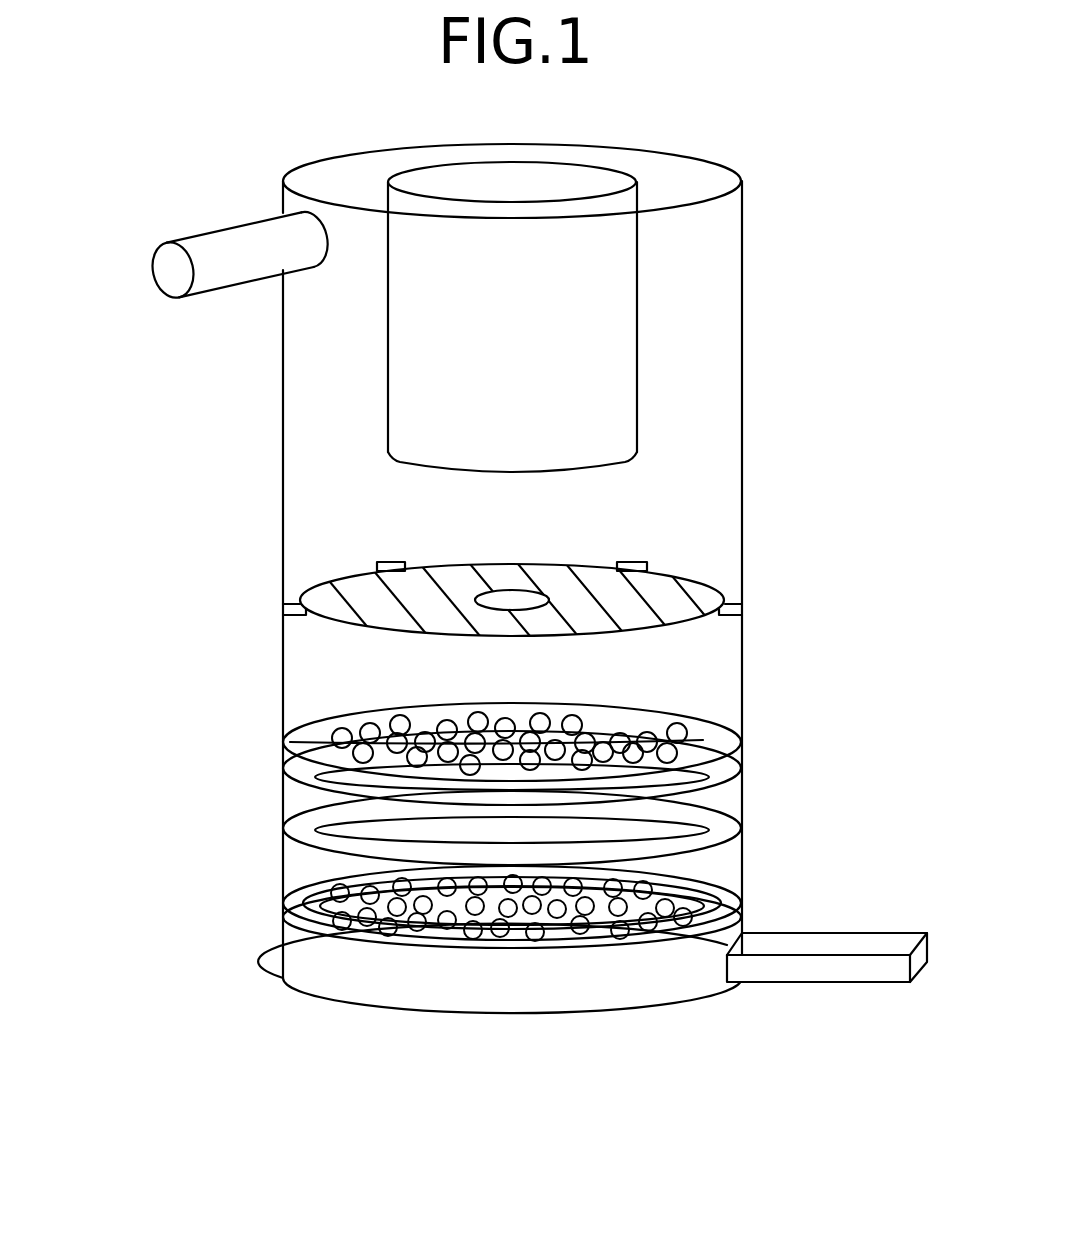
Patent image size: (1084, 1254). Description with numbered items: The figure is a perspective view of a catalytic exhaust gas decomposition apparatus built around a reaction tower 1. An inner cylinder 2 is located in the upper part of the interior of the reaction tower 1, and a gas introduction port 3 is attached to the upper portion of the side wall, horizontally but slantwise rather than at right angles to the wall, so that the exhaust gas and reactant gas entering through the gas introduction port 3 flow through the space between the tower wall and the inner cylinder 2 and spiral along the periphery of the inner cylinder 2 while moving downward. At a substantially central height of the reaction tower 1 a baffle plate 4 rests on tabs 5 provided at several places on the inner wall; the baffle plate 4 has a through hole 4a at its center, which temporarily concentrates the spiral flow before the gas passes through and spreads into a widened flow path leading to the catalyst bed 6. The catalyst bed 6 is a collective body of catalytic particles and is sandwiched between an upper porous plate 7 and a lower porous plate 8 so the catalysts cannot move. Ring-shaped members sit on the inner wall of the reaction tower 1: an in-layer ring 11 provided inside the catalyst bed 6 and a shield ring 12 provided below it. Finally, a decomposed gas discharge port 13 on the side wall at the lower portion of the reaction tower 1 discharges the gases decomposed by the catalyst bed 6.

The reaction tower 1 is at (742, 345).
The inner cylinder 2 is at (637, 275).
The gas introduction port 3 is at (152, 278).
The baffle plate 4 is at (563, 567).
The through hole 4a is at (514, 601).
The tabs 5 is at (735, 596).
The catalyst bed 6 is at (727, 803).
The upper porous plate 7 is at (297, 743).
The lower porous plate 8 is at (297, 910).
The in-layer ring 11 is at (297, 832).
The shield ring 12 is at (303, 935).
The decomposed gas discharge port 13 is at (863, 982).